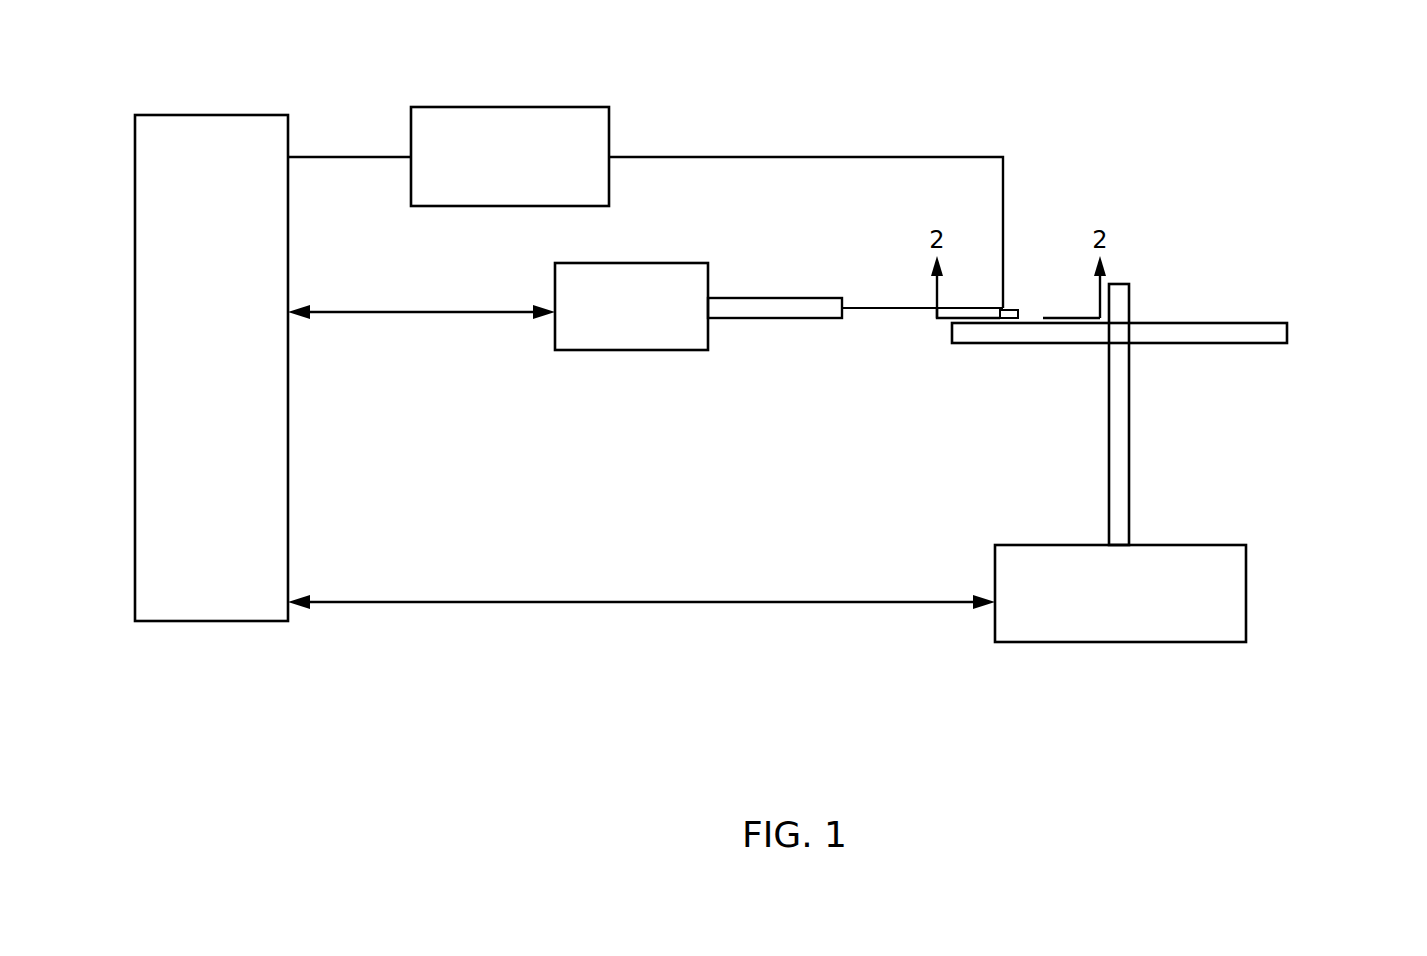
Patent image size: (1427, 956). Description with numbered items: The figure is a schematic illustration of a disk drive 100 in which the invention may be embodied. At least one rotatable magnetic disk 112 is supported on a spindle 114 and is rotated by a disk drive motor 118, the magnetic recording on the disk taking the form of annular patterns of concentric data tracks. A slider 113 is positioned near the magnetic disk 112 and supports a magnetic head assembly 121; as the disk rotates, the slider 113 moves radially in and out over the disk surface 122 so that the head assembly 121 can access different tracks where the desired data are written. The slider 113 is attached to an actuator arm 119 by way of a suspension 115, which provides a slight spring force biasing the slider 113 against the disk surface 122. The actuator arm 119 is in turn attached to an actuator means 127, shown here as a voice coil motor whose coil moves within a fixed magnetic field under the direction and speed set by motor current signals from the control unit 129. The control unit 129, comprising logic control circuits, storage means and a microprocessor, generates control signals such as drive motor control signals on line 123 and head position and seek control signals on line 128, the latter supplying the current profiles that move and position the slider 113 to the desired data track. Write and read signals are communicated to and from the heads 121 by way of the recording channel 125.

The disk drive 100 is at (550, 730).
The magnetic disk 112 is at (1282, 358).
The slider 113 is at (1012, 310).
The spindle 114 is at (1109, 408).
The suspension 115 is at (915, 305).
The disk drive motor 118 is at (1188, 545).
The actuator arm 119 is at (750, 298).
The magnetic head assembly 121 is at (1022, 318).
The disk surface 122 is at (1234, 322).
The line 123 is at (672, 604).
The recording channel 125 is at (490, 107).
The actuator means 127 is at (638, 263).
The line 128 is at (425, 314).
The control unit 129 is at (210, 150).